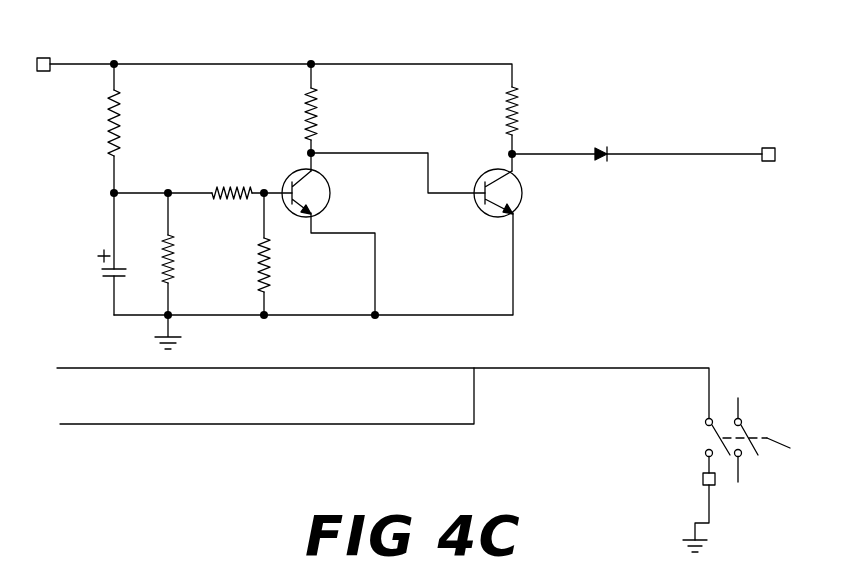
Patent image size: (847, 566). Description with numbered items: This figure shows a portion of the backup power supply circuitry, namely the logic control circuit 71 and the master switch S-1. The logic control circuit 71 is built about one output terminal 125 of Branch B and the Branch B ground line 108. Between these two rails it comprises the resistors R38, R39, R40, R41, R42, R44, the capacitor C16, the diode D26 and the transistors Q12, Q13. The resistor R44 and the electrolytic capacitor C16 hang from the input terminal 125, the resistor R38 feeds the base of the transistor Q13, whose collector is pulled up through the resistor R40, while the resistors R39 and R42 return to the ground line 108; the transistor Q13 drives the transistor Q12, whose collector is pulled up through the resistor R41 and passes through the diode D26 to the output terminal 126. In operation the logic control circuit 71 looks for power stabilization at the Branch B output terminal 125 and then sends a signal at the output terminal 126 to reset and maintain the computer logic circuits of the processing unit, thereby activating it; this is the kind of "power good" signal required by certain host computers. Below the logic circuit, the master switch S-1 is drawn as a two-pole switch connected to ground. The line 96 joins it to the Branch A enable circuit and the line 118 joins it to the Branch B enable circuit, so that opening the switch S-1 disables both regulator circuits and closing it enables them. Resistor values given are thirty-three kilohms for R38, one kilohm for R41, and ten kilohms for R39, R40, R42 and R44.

The logic control circuit 71 is at (417, 61).
The output terminal 125 is at (44, 57).
The output terminal 126 is at (791, 156).
The Branch B ground line 108 is at (194, 337).
The line 96 is at (57, 368).
The line 118 is at (60, 424).
The resistor R44 is at (136, 123).
The resistor R38 is at (228, 181).
The resistor R39 is at (190, 259).
The resistor R40 is at (334, 102).
The resistor R41 is at (536, 111).
The resistor R42 is at (288, 265).
The capacitor C16 is at (129, 261).
The transistor Q13 is at (329, 203).
The transistor Q12 is at (521, 203).
The diode D26 is at (608, 167).
The master switch S-1 is at (757, 469).